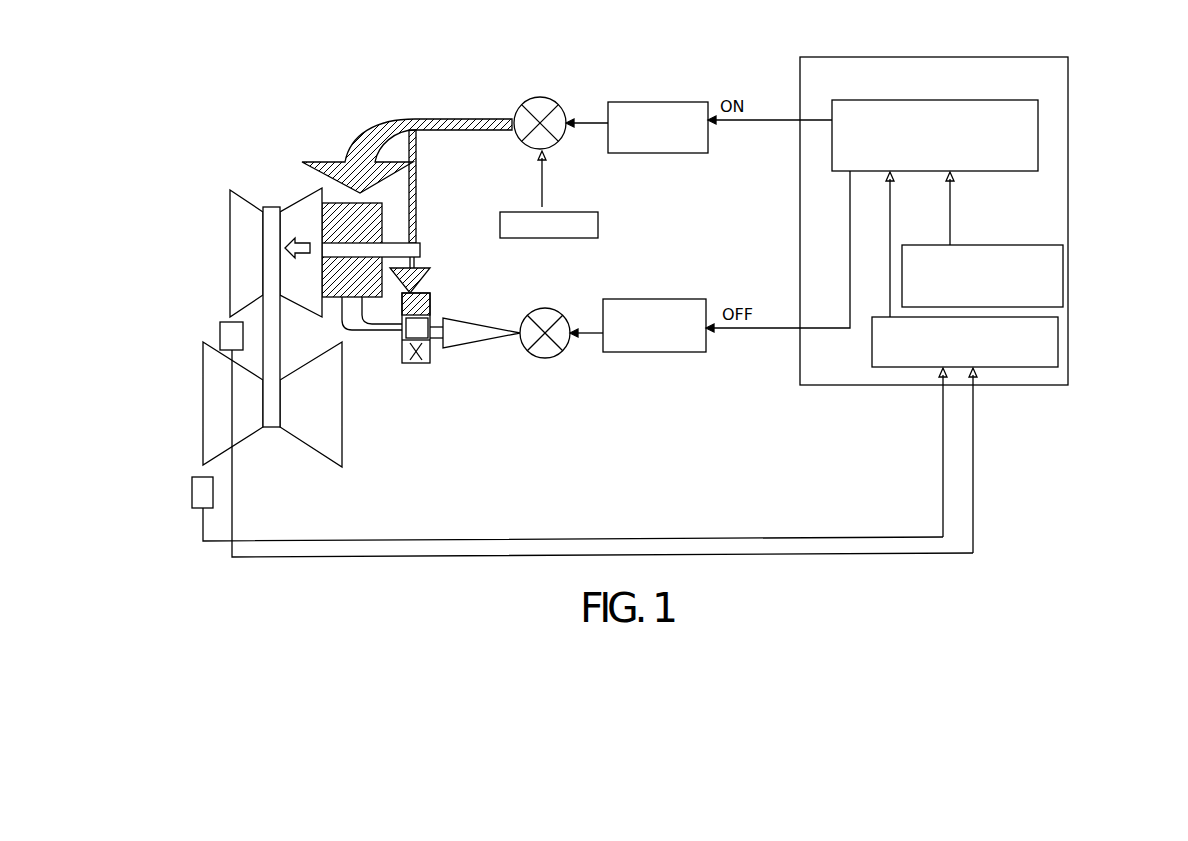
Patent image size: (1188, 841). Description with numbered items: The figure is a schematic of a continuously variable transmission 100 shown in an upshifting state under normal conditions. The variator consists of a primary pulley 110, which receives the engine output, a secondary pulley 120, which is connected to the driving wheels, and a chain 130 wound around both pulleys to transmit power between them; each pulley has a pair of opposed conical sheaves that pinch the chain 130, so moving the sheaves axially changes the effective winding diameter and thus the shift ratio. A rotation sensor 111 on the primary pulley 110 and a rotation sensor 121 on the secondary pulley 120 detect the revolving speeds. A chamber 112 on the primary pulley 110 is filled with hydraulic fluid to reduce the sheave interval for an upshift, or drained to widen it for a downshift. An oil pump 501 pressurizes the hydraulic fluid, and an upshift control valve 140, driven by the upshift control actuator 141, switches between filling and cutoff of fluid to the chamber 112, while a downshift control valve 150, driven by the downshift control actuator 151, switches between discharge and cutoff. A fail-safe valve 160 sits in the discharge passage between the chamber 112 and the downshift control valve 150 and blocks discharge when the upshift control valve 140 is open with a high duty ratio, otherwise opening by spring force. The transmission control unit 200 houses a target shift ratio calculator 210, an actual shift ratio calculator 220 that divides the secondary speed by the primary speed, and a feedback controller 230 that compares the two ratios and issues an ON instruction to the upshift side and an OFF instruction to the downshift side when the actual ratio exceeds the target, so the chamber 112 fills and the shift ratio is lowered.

The continuously variable transmission 100 is at (162, 142).
The primary pulley 110 is at (230, 227).
The rotation sensor 111 is at (222, 328).
The chamber 112 is at (230, 190).
The secondary pulley 120 is at (205, 380).
The rotation sensor 121 is at (192, 493).
The chain 130 is at (277, 427).
The upshift control valve 140 is at (557, 135).
The upshift control actuator 141 is at (678, 98).
The downshift control valve 150 is at (565, 345).
The downshift control actuator 151 is at (680, 355).
The fail-safe valve 160 is at (432, 360).
The transmission control unit 200 is at (1068, 78).
The target shift ratio calculator 210 is at (1063, 280).
The actual shift ratio calculator 220 is at (1058, 353).
The feedback controller 230 is at (1038, 137).
The oil pump 501 is at (553, 243).